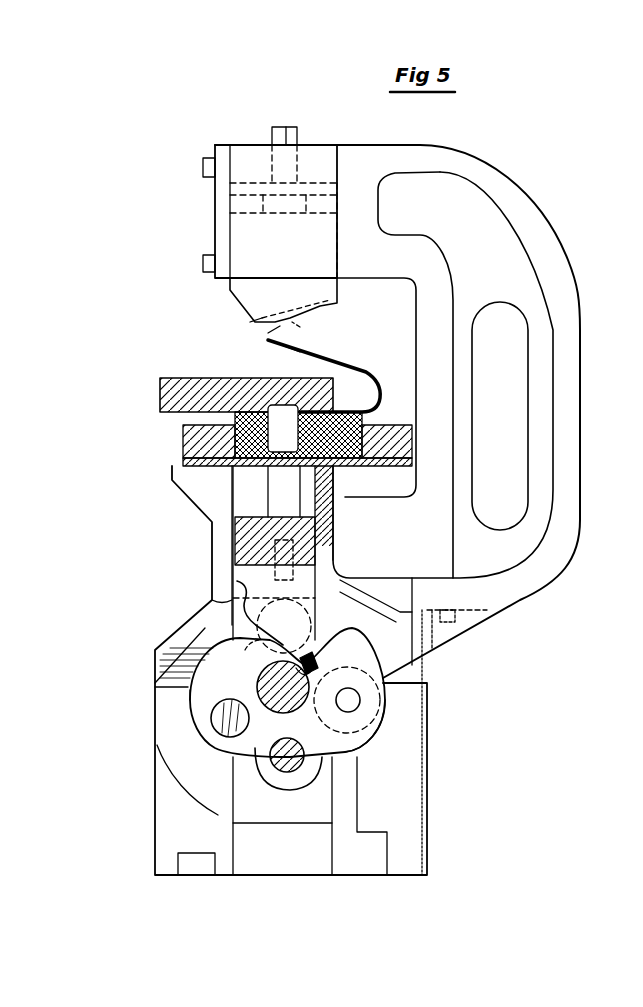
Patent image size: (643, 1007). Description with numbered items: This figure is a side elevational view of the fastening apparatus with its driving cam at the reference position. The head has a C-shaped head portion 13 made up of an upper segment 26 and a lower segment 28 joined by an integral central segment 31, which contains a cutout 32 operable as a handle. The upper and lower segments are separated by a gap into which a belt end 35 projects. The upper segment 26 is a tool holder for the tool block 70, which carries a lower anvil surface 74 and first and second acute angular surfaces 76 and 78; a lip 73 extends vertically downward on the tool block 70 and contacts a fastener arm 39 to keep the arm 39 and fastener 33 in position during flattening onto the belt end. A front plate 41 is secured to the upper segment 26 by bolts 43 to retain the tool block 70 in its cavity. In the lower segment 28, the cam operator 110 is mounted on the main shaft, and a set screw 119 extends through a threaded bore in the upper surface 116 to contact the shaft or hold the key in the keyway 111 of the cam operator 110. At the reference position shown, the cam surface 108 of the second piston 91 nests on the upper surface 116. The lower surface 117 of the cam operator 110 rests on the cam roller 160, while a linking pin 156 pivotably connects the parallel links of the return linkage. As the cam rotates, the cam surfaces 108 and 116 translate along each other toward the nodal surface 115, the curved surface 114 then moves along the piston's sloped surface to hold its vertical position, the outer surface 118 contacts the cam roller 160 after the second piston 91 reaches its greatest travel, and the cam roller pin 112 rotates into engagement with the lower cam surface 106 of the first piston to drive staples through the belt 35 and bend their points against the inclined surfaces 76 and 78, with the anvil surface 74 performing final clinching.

The C-shaped head portion 13 is at (440, 276).
The upper segment 26 is at (420, 145).
The lower segment 28 is at (460, 628).
The central segment 31 is at (584, 312).
The cutout 32 is at (510, 353).
The fastener 33 is at (370, 380).
The belt end 35 is at (165, 412).
The fastener arm 39 is at (300, 355).
The front plate 41 is at (215, 205).
The bolt 43 is at (203, 164).
The tool block 70 is at (228, 291).
The lip 73 is at (252, 330).
The anvil surface 74 is at (268, 333).
The acute angular surface 76 is at (300, 327).
The acute angular surface 78 is at (332, 316).
The second piston 91 is at (331, 578).
The lower cam surface 106 is at (245, 652).
The second piston cam surface 108 is at (284, 656).
The cam operator 110 is at (183, 717).
The keyway 111 is at (305, 666).
The cam roller pin 112 is at (225, 712).
The curved surface 114 is at (188, 687).
The nodal surface 115 is at (212, 605).
The upper surface 116 is at (237, 581).
The lower surface 117 is at (215, 768).
The outer surface 118 is at (385, 715).
The set screw 119 is at (322, 650).
The linking pin 156 is at (360, 700).
The cam roller 160 is at (285, 772).